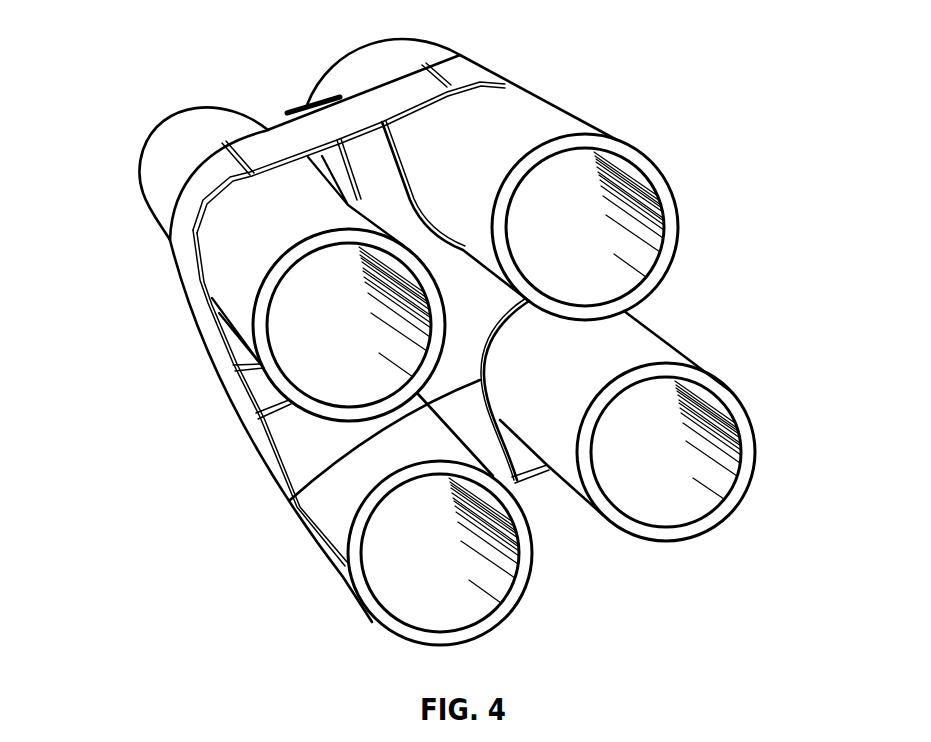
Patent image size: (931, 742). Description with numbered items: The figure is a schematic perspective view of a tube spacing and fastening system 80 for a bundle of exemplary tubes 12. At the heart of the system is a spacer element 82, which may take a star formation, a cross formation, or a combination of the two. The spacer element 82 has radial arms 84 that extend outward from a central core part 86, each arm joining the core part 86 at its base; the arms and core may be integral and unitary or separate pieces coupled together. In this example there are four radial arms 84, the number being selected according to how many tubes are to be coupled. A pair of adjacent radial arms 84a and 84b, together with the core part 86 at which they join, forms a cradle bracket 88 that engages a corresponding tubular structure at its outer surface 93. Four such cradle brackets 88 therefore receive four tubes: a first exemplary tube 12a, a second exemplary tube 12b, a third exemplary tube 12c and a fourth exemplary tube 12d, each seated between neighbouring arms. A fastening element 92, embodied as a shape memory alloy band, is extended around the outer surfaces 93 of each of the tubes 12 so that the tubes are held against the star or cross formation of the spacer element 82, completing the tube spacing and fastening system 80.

The tube spacing and fastening system 80 is at (147, 58).
The spacer element 82 is at (231, 389).
The radial arms 84 is at (342, 134).
The radial arm 84a is at (264, 397).
The radial arm 84b is at (495, 462).
The core part 86 is at (488, 319).
The cradle bracket 88 is at (290, 500).
The fastening element 92 is at (480, 65).
The outer surface 93 is at (572, 115).
The tubes 12 is at (692, 426).
The first exemplary tube 12a is at (340, 567).
The second exemplary tube 12b is at (150, 204).
The third exemplary tube 12c is at (607, 135).
The fourth exemplary tube 12d is at (677, 352).